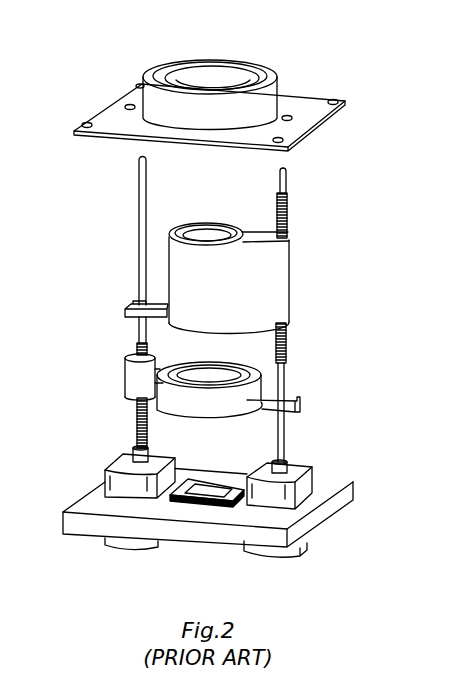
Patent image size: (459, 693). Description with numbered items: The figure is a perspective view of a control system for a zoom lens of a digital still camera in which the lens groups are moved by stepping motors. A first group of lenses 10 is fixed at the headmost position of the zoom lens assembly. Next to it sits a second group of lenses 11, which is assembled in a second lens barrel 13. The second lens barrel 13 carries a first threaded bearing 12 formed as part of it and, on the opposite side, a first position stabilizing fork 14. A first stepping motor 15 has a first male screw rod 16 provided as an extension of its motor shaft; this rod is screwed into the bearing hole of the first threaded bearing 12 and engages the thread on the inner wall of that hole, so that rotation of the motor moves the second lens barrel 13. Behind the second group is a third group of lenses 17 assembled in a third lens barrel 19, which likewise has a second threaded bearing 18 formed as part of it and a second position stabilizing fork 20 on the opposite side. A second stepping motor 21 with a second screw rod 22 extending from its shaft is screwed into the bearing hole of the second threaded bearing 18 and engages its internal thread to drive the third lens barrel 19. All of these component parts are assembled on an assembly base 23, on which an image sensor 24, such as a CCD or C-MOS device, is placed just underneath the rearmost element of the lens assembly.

The first group of lenses 10 is at (215, 85).
The second group of lenses 11 is at (208, 240).
The first threaded bearing 12 is at (282, 265).
The second lens barrel 13 is at (215, 293).
The first position stabilizing fork 14 is at (125, 313).
The first stepping motor 15 is at (305, 487).
The first male screw rod 16 is at (288, 205).
The third group of lenses 17 is at (210, 377).
The second threaded bearing 18 is at (127, 378).
The third lens barrel 19 is at (200, 403).
The second position stabilizing fork 20 is at (298, 405).
The second stepping motor 21 is at (107, 483).
The second screw rod 22 is at (130, 417).
The assembly base 23 is at (202, 538).
The image sensor 24 is at (170, 502).